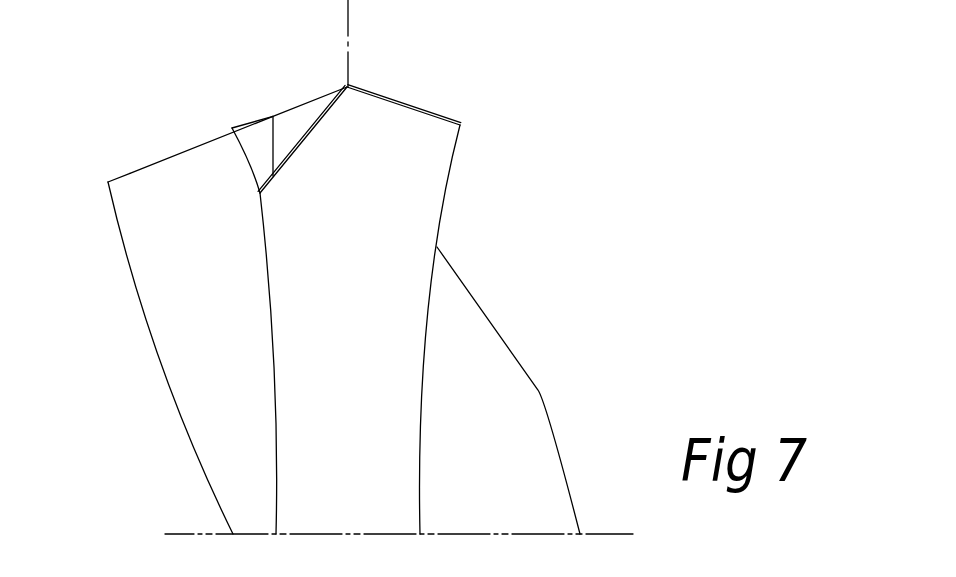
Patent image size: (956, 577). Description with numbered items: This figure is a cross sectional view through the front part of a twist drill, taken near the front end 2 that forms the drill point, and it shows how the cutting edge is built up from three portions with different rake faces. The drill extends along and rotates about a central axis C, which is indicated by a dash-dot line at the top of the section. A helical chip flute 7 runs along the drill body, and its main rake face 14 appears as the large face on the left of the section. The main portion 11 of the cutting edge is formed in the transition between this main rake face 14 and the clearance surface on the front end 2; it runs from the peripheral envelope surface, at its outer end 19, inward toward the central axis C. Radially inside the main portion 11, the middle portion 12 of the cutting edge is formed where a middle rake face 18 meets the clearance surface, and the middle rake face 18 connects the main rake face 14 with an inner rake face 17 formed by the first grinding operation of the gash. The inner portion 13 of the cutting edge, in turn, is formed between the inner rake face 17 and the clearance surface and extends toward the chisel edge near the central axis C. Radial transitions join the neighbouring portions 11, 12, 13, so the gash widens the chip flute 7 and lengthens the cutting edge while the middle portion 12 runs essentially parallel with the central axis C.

The central axis C is at (360, 43).
The front end 2 is at (280, 110).
The helical chip flute 7 is at (196, 348).
The main portion 11 is at (148, 163).
The middle portion 12 is at (254, 118).
The inner portion 13 is at (300, 104).
The main rake face 14 is at (215, 276).
The inner rake face 17 is at (293, 124).
The middle rake face 18 is at (260, 145).
The outer end 19 is at (106, 181).